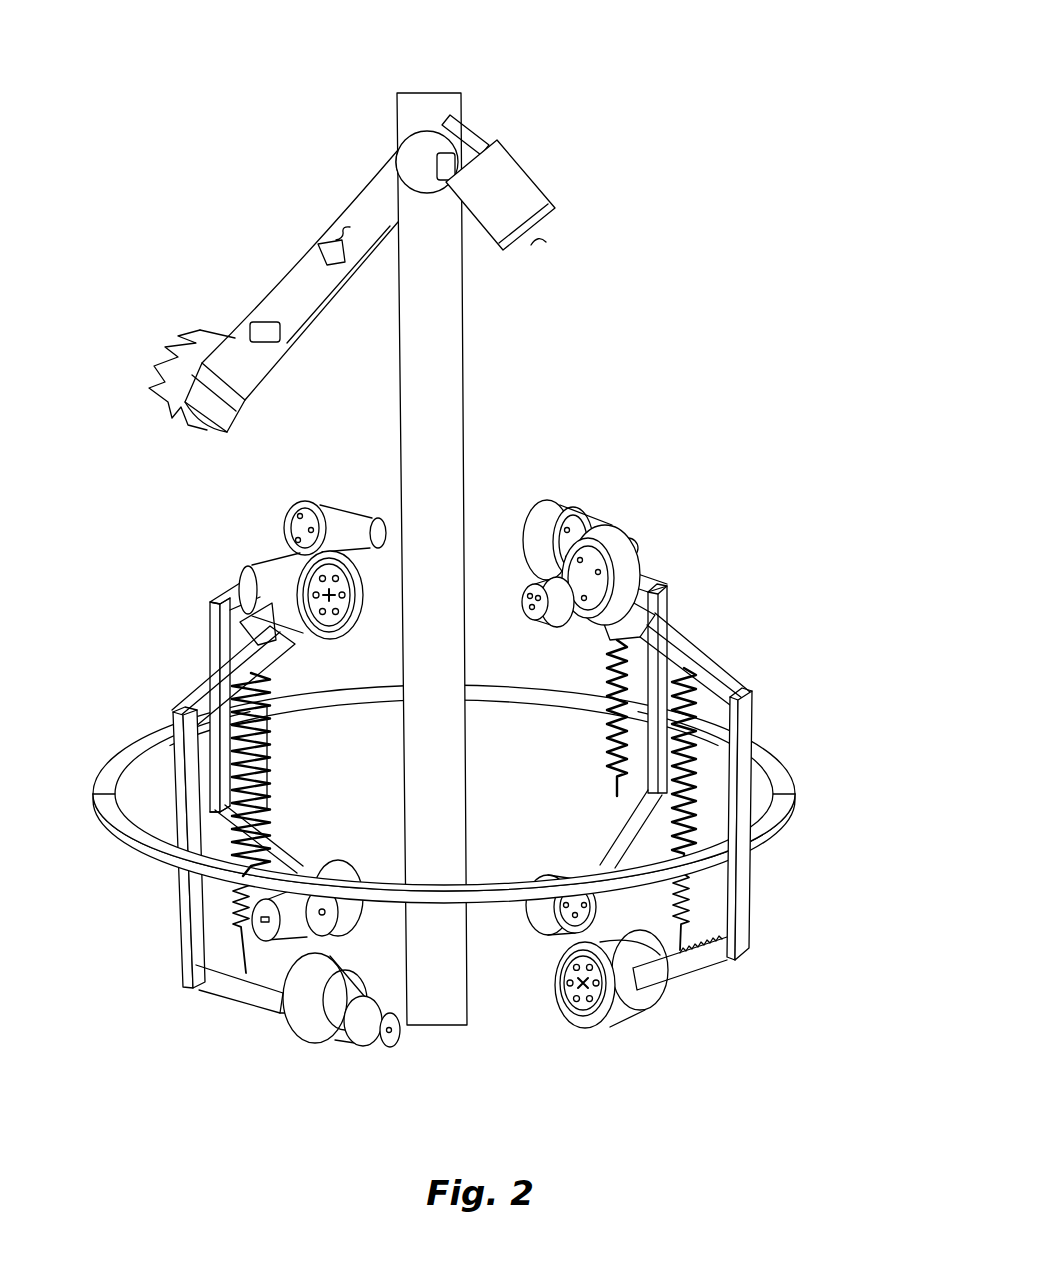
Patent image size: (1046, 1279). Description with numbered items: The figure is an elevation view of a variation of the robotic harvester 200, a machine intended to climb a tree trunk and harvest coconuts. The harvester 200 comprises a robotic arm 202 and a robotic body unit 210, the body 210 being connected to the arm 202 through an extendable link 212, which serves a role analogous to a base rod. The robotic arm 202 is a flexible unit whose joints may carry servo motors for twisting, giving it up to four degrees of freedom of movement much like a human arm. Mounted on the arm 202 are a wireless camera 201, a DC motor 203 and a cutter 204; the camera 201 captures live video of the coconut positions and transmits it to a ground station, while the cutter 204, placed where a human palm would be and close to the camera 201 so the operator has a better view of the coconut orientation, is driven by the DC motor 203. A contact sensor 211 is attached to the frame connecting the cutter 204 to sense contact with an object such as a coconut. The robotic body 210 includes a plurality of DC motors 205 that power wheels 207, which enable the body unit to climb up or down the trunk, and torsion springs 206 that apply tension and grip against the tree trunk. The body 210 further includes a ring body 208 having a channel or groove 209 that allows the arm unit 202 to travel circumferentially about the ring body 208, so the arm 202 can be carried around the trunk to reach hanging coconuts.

The robotic harvester 200 is at (747, 217).
The wireless camera 201 is at (320, 255).
The robotic arm 202 is at (327, 328).
The DC motor 203 is at (543, 187).
The cutter 204 is at (153, 372).
The DC motors 205 is at (270, 562).
The torsion springs 206 is at (607, 772).
The wheels 207 is at (607, 548).
The ring body 208 is at (795, 797).
The channel or groove 209 is at (392, 875).
The robotic body unit 210 is at (480, 910).
The contact sensor 211 is at (248, 328).
The extendable link 212 is at (465, 428).